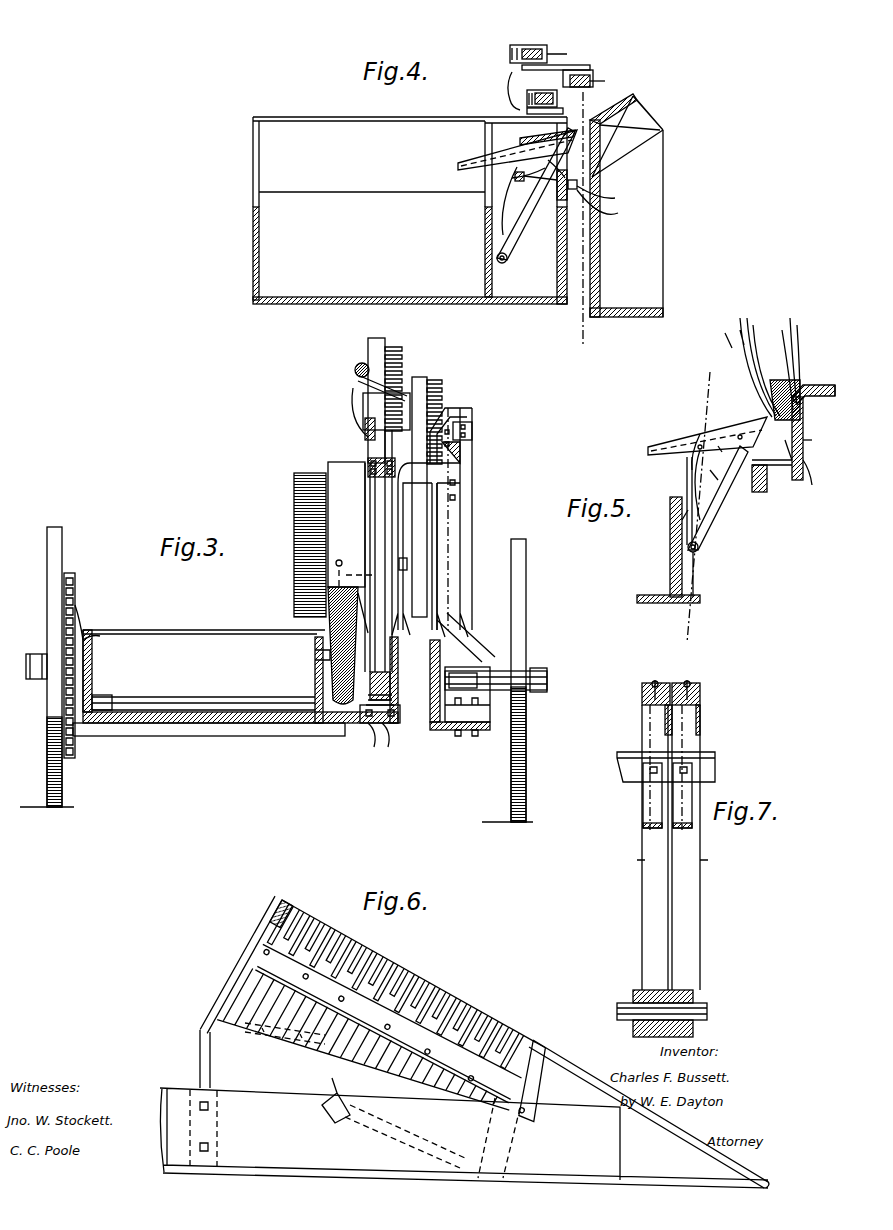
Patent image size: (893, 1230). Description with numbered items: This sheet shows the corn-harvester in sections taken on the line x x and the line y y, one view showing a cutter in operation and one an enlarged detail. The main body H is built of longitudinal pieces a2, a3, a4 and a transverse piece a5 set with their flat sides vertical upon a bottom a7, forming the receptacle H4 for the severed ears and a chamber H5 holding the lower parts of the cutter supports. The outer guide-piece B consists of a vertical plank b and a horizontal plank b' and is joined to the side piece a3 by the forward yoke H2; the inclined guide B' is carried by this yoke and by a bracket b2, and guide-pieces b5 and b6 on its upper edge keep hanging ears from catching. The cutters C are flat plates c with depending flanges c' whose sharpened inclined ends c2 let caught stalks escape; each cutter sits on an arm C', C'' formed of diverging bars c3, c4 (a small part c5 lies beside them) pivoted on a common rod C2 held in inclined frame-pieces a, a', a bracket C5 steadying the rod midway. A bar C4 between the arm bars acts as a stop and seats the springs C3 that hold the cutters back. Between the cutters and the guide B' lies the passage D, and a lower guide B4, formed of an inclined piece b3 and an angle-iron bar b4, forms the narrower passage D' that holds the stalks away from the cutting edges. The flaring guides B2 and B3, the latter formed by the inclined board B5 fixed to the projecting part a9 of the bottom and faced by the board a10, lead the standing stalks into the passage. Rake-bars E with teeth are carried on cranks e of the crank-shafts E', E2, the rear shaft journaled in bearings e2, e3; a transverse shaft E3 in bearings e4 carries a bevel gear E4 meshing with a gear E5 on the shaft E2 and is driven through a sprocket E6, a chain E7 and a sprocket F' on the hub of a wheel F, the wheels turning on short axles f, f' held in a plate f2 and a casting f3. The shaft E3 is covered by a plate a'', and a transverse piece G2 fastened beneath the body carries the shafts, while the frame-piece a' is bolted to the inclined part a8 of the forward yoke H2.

In FIG. 4, the main frame / reservoir box H is at (410, 202).
In FIG. 3, the main frame / reservoir box H is at (240, 668).
In FIG. 5, the main frame / reservoir box H is at (652, 547).
In FIG. 6, the main frame / reservoir box H is at (464, 1138).
In FIG. 3, the bracket of frame H2 is at (472, 537).
In FIG. 6, the bracket of frame H2 is at (278, 912).
In FIG. 4, the partition of box H4 is at (371, 262).
In FIG. 3, the partition of box H4 is at (202, 672).
In FIG. 4, the chamber of box H5 is at (524, 242).
In FIG. 3, the chamber of box H5 is at (376, 699).
In FIG. 5, the chamber of box H5 is at (707, 565).
In FIG. 4, the inclined frame-piece a is at (527, 293).
In FIG. 3, the inclined frame-piece a is at (375, 551).
In FIG. 6, the inclined frame-piece a is at (533, 1082).
In FIG. 3, the inclined frame-piece a' is at (343, 524).
In FIG. 6, the inclined frame-piece a' is at (241, 992).
In FIG. 3, the plate a'' is at (206, 690).
In FIG. 4, the longitudinal frame-piece a2 is at (471, 265).
In FIG. 3, the longitudinal frame-piece a2 is at (315, 681).
In FIG. 5, the longitudinal frame-piece a2 is at (682, 578).
In FIG. 4, the longitudinal side piece a3 is at (547, 265).
In FIG. 3, the longitudinal side piece a3 is at (396, 678).
In FIG. 6, the longitudinal side piece a3 is at (222, 1129).
In FIG. 4, the longitudinal frame-piece a4 is at (259, 265).
In FIG. 3, the longitudinal frame-piece a4 is at (92, 662).
In FIG. 4, the transverse piece a5 is at (371, 144).
In FIG. 3, the transverse piece a5 is at (202, 647).
In FIG. 4, the bottom a7 is at (371, 219).
In FIG. 3, the bottom a7 is at (193, 736).
In FIG. 5, the bottom a7 is at (665, 603).
In FIG. 6, the bottom a7 is at (395, 1178).
In FIG. 3, the inclined part of forward yoke a8 is at (372, 505).
In FIG. 6, the inclined part of forward yoke a8 is at (270, 945).
In FIG. 6, the forwardly-projecting part of bottom a9 is at (630, 1184).
In FIG. 6, the board a10 is at (694, 1144).
In FIG. 4, the longitudinal guide-piece B is at (639, 136).
In FIG. 3, the longitudinal guide-piece B is at (451, 428).
In FIG. 5, the longitudinal guide-piece B is at (778, 375).
In FIG. 4, the inclined guide B' is at (608, 150).
In FIG. 3, the inclined guide B' is at (465, 556).
In FIG. 5, the inclined guide B' is at (814, 450).
In FIG. 3, the inclined guide B2 is at (466, 637).
In FIG. 6, the inclined guide B3 is at (647, 1143).
In FIG. 5, the guide B4 is at (732, 566).
In FIG. 6, the guide B4 is at (390, 1038).
In FIG. 6, the inclined board B5 is at (648, 1114).
In FIG. 4, the plank b is at (626, 218).
In FIG. 3, the plank b is at (424, 691).
In FIG. 5, the plank b is at (806, 438).
In FIG. 4, the plank b' is at (631, 215).
In FIG. 3, the plank b' is at (460, 712).
In FIG. 3, the plate or bracket b2 is at (472, 431).
In FIG. 4, the inclined piece b3 is at (567, 195).
In FIG. 5, the inclined piece b3 is at (765, 492).
In FIG. 6, the inclined piece b3 is at (480, 1115).
In FIG. 4, the angle-iron bar b4 is at (605, 205).
In FIG. 5, the angle-iron bar b4 is at (815, 479).
In FIG. 6, the angle-iron bar b4 is at (512, 1120).
In FIG. 4, the inclined guide-piece b5 is at (613, 107).
In FIG. 3, the inclined guide-piece b5 is at (472, 415).
In FIG. 5, the inclined guide-piece b5 is at (813, 400).
In FIG. 4, the second guide-piece b6 is at (648, 103).
In FIG. 3, the second guide-piece b6 is at (472, 408).
In FIG. 5, the second guide-piece b6 is at (830, 383).
In FIG. 4, the cutters C is at (511, 151).
In FIG. 5, the cutters C is at (706, 436).
In FIG. 7, the cutters C is at (670, 694).
In FIG. 6, the cutters C is at (395, 989).
In FIG. 4, the cutter-supporting arms C' is at (536, 194).
In FIG. 3, the cutter-supporting arms C' is at (332, 645).
In FIG. 5, the cutter-supporting arms C' is at (729, 495).
In FIG. 7, the cutter-supporting arms C' is at (670, 847).
In FIG. 6, the cutter-supporting arms C' is at (335, 1052).
In FIG. 6, the slats C'' is at (364, 1062).
In FIG. 4, the pivot-rod C2 is at (505, 263).
In FIG. 3, the pivot-rod C2 is at (340, 554).
In FIG. 5, the pivot-rod C2 is at (698, 549).
In FIG. 7, the pivot-rod C2 is at (630, 1003).
In FIG. 4, the springs C3 is at (512, 222).
In FIG. 5, the springs C3 is at (690, 482).
In FIG. 7, the springs C3 is at (652, 805).
In FIG. 4, the bar C4 is at (536, 154).
In FIG. 5, the bar C4 is at (705, 445).
In FIG. 7, the bar C4 is at (622, 765).
In FIG. 3, the bracket C5 is at (315, 659).
In FIG. 6, the bracket C5 is at (330, 1088).
In FIG. 3, the flat plates c is at (304, 539).
In FIG. 5, the flat plates c is at (720, 427).
In FIG. 7, the flat plates c is at (671, 675).
In FIG. 6, the flat plates c is at (398, 984).
In FIG. 4, the depending flanges c' is at (556, 169).
In FIG. 5, the depending flanges c' is at (760, 460).
In FIG. 7, the depending flanges c' is at (671, 720).
In FIG. 4, the inclined flange ends c2 is at (605, 194).
In FIG. 5, the inclined flange ends c2 is at (782, 500).
In FIG. 4, the rear bar of arm c3 is at (508, 182).
In FIG. 4, the diverging bar of arm c4 is at (540, 185).
In FIG. 5, the diverging bar of arm c4 is at (715, 500).
In FIG. 7, the diverging bar of arm c4 is at (671, 857).
In FIG. 6, the diverging bar of arm c4 is at (314, 1035).
In FIG. 5, the pin c5 is at (670, 517).
In FIG. 6, the pin c5 is at (279, 1025).
In FIG. 4, the passage D is at (600, 216).
In FIG. 5, the passage D is at (807, 445).
In FIG. 4, the slot or passage D' is at (628, 164).
In FIG. 5, the slot or passage D' is at (779, 489).
In FIG. 4, the rakes E is at (557, 57).
In FIG. 3, the rakes E is at (405, 474).
In FIG. 4, the forward crank-shaft E' is at (545, 93).
In FIG. 3, the forward crank-shaft E' is at (372, 416).
In FIG. 3, the rear crank-shaft E2 is at (355, 577).
In FIG. 3, the horizontal shaft E3 is at (222, 703).
In FIG. 3, the beveled gear-wheel E4 is at (356, 744).
In FIG. 3, the gear-wheel E5 is at (378, 744).
In FIG. 3, the sprocket-wheel E6 is at (47, 712).
In FIG. 3, the chain-belt E7 is at (75, 590).
In FIG. 4, the cranks e is at (507, 89).
In FIG. 3, the cranks e is at (412, 575).
In FIG. 3, the bearing e2 is at (370, 469).
In FIG. 3, the bearing e3 is at (394, 690).
In FIG. 3, the bearings e4 is at (103, 694).
In FIG. 3, the wheels F is at (47, 667).
In FIG. 3, the sprocket-wheel F' is at (514, 680).
In FIG. 3, the short axle f is at (89, 620).
In FIG. 3, the short axle f' is at (496, 673).
In FIG. 3, the plate f2 is at (103, 638).
In FIG. 3, the bracket or casting f3 is at (463, 677).
In FIG. 3, the transverse horizontal piece G2 is at (270, 736).
In FIG. 4, the section line x is at (574, 221).
In FIG. 5, the section line y is at (698, 509).